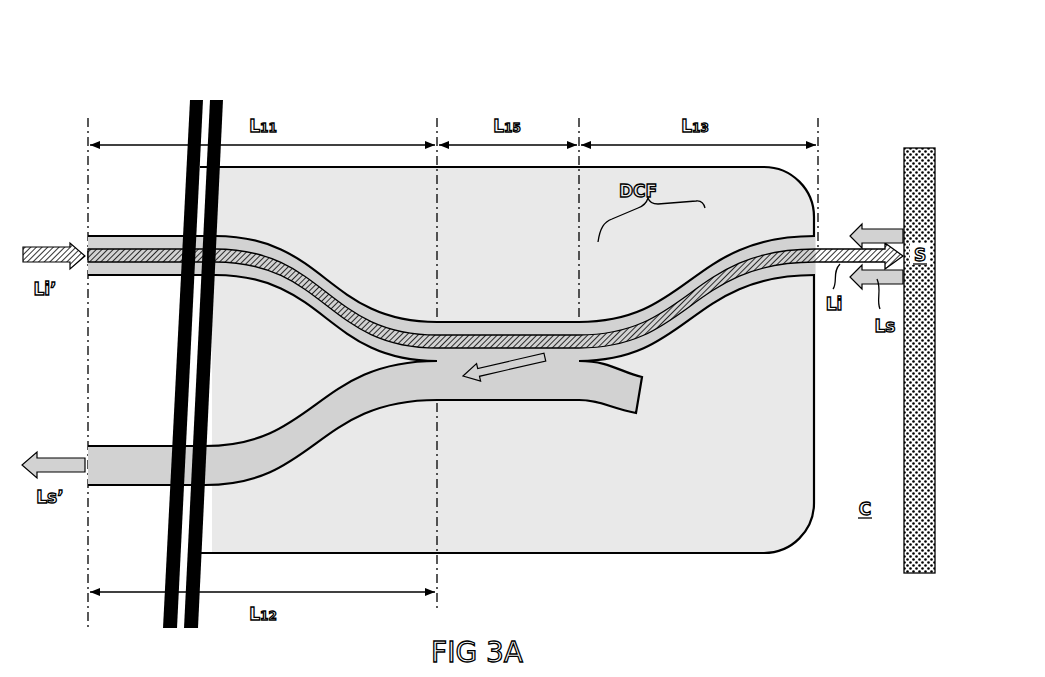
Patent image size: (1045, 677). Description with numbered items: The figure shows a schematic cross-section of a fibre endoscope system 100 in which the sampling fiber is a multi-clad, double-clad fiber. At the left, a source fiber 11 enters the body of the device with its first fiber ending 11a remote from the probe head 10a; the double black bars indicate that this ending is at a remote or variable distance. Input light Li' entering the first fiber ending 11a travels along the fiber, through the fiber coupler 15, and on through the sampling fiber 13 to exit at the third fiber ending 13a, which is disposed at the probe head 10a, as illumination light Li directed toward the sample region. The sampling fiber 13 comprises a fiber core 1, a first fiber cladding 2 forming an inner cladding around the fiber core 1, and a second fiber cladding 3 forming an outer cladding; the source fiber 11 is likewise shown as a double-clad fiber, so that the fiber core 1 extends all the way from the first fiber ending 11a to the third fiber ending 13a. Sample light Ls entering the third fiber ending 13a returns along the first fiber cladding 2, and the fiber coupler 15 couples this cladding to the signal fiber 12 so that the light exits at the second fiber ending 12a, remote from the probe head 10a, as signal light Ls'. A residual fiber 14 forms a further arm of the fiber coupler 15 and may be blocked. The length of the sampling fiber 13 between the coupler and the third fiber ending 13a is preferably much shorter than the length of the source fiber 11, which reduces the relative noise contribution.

The fibre endoscope system 100 is at (95, 82).
The probe head 10a is at (628, 562).
The source fiber 11 is at (112, 225).
The first fiber ending 11a is at (86, 252).
The signal fiber 12 is at (112, 433).
The second fiber ending 12a is at (86, 450).
The sampling fiber 13 is at (757, 229).
The third fiber ending 13a is at (819, 247).
The residual fiber 14 is at (617, 453).
The fiber coupler 15 is at (496, 306).
The fiber core 1 is at (726, 278).
The first fiber cladding 2 is at (685, 287).
The second fiber cladding 3 is at (643, 298).